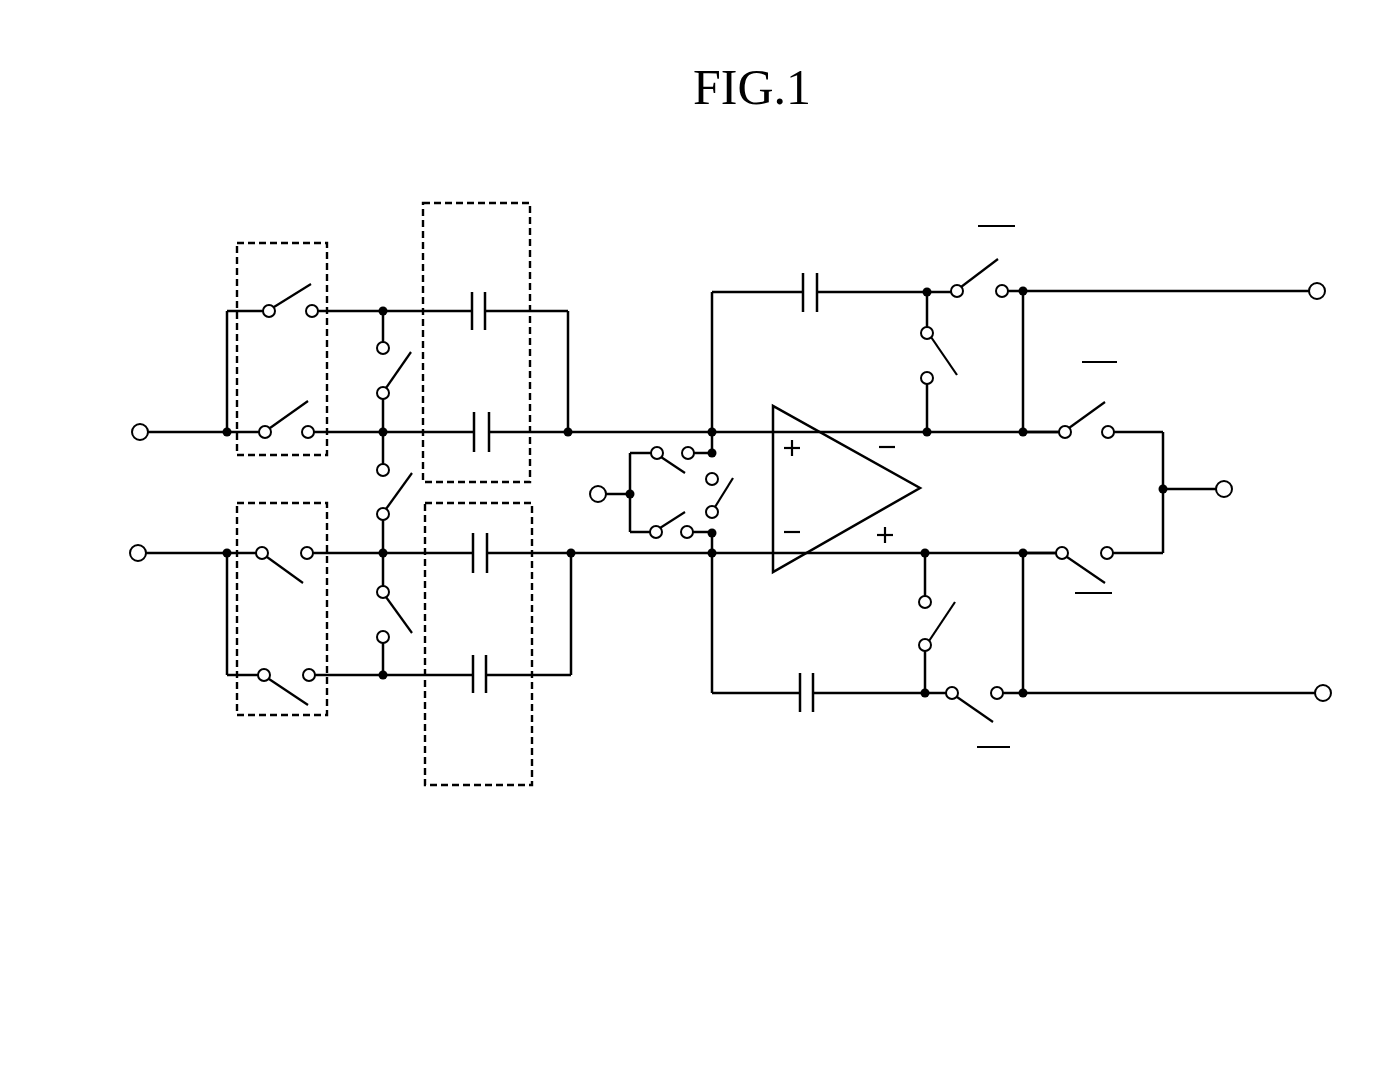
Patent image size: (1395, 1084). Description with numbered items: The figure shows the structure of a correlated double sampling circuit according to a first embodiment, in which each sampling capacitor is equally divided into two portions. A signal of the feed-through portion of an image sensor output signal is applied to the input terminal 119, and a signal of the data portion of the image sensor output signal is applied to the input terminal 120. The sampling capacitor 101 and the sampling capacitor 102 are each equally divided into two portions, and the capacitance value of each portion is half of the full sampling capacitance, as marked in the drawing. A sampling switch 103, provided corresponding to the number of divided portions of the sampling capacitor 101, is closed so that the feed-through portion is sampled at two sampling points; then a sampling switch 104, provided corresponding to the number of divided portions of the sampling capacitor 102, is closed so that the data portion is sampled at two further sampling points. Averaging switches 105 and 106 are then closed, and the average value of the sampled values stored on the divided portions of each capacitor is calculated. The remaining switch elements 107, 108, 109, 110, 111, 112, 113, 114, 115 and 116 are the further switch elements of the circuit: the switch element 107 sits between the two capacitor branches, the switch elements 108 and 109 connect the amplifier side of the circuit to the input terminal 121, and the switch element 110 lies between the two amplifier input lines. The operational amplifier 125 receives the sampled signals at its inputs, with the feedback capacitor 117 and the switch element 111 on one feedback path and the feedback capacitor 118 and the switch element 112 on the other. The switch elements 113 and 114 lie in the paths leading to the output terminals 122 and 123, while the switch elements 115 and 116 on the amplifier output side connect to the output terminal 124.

The sampling capacitor 101 is at (477, 202).
The sampling capacitor 102 is at (477, 785).
The sampling switch 103 is at (277, 242).
The sampling switch 104 is at (288, 717).
The averaging switch 105 is at (370, 350).
The averaging switch 106 is at (367, 645).
The switch element 107 is at (330, 478).
The switch element 108 is at (668, 443).
The switch element 109 is at (665, 542).
The switch element 110 is at (728, 507).
The switch element 111 is at (913, 337).
The switch element 112 is at (913, 630).
The switch element 113 is at (1018, 268).
The switch element 114 is at (1018, 710).
The switch element 115 is at (1120, 417).
The switch element 116 is at (1117, 572).
The feedback capacitor 117 is at (787, 262).
The feedback capacitor 118 is at (790, 703).
The input terminal 119 is at (140, 415).
The input terminal 120 is at (138, 570).
The input terminal 121 is at (600, 472).
The output terminal 122 is at (1327, 268).
The output terminal 123 is at (1337, 708).
The output terminal 124 is at (1228, 503).
The operational amplifier 125 is at (770, 388).